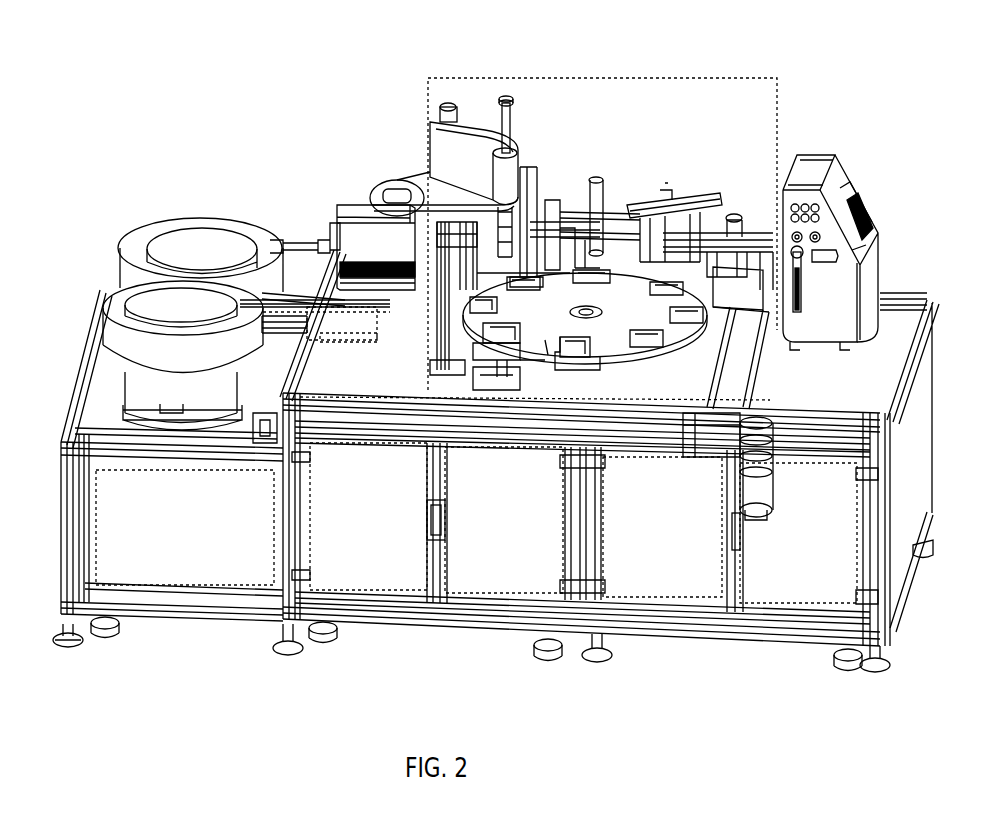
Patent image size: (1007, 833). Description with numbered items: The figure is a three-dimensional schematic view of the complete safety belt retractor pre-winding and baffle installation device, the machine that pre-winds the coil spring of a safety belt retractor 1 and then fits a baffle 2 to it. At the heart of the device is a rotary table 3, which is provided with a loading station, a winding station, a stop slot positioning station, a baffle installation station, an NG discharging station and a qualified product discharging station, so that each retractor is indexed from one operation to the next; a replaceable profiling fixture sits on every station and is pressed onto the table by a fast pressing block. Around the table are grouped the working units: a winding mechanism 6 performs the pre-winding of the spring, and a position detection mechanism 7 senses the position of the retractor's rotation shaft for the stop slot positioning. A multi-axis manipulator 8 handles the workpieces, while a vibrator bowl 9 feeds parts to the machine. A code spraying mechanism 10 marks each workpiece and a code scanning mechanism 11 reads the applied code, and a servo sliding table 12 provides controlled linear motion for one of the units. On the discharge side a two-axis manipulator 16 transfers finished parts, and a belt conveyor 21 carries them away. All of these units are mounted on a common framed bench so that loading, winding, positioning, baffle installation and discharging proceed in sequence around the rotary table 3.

The safety belt retractor 1 is at (602, 200).
The baffle 2 is at (266, 208).
The rotary table 3 is at (583, 500).
The winding mechanism 6 is at (454, 537).
The position detection mechanism 7 is at (390, 476).
The multi-axis manipulator 8 is at (409, 148).
The vibrator bowl 9 is at (140, 350).
The code spraying mechanism 10 is at (619, 139).
The code scanning mechanism 11 is at (685, 136).
The servo sliding table 12 is at (535, 148).
The two-axis manipulator 16 is at (726, 160).
The belt conveyor 21 is at (688, 555).